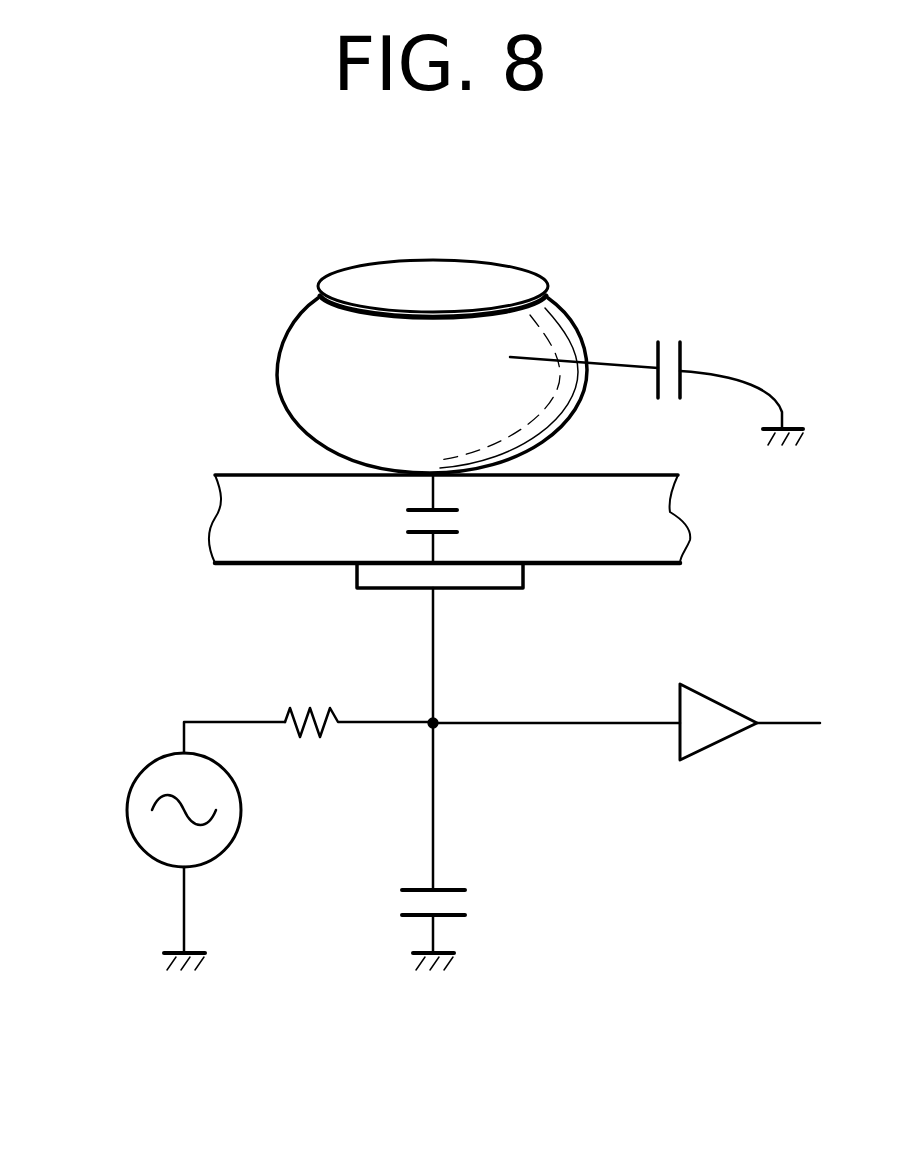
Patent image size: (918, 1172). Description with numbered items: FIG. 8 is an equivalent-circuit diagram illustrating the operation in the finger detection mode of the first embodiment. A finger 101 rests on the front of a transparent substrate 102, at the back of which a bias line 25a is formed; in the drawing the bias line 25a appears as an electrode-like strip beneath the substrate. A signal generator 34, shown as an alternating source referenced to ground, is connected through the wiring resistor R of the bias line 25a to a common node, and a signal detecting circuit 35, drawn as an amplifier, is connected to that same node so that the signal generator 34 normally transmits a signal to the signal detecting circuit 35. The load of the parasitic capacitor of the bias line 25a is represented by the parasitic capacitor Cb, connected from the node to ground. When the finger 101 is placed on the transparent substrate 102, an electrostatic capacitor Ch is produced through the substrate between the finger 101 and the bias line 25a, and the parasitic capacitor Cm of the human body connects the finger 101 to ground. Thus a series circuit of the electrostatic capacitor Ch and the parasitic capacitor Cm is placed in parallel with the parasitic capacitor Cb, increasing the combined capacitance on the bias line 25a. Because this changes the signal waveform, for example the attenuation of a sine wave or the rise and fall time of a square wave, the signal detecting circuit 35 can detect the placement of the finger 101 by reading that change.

The finger 101 is at (308, 330).
The transparent substrate 102 is at (670, 512).
The bias line 25a is at (502, 590).
The signal generator 34 is at (146, 777).
The signal detecting circuit 35 is at (705, 748).
The parasitic capacitor of the human body Cm is at (656, 368).
The electrostatic capacitor Ch is at (457, 519).
The parasitic capacitor of the bias line Cb is at (462, 930).
The wiring resistor of the bias line R is at (359, 700).